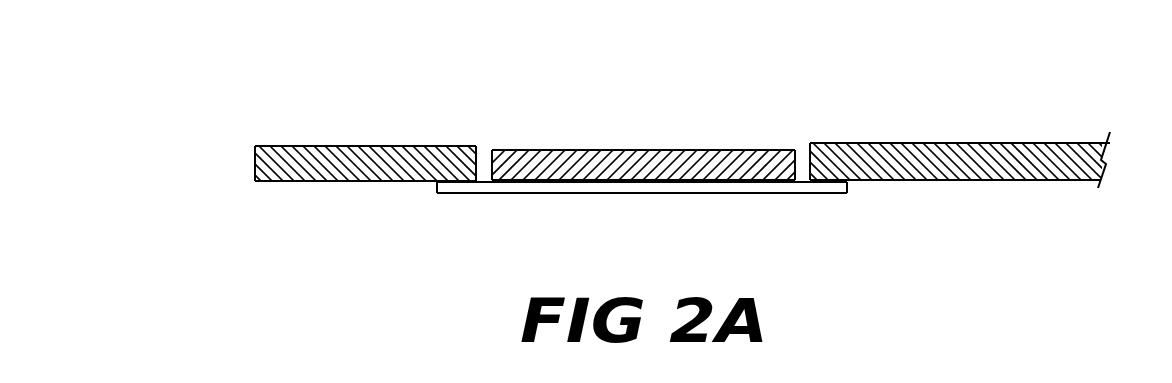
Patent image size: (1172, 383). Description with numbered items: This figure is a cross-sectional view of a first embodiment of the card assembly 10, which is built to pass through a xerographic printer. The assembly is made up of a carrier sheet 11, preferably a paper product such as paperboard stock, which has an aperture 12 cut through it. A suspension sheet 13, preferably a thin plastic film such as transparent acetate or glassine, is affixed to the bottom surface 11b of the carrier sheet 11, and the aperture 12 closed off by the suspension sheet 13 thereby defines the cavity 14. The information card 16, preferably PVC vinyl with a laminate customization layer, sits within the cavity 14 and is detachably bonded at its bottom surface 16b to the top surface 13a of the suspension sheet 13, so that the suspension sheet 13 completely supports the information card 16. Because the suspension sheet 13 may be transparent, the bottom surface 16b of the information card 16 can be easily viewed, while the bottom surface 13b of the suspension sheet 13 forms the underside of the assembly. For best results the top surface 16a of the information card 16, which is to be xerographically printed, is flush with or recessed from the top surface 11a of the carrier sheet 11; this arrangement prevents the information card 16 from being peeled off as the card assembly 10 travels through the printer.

The card assembly 10 is at (673, 148).
The carrier sheet 11 is at (267, 162).
The top surface of the carrier sheet 11a is at (347, 146).
The bottom surface of the carrier sheet 11b is at (305, 183).
The aperture 12 is at (483, 152).
The suspension sheet 13 is at (835, 194).
The top surface of the suspension sheet 13a is at (800, 183).
The bottom surface of the suspension sheet 13b is at (808, 187).
The cavity 14 is at (704, 92).
The information card 16 is at (655, 157).
The top surface of the information card 16a is at (548, 148).
The bottom surface of the information card 16b is at (506, 183).